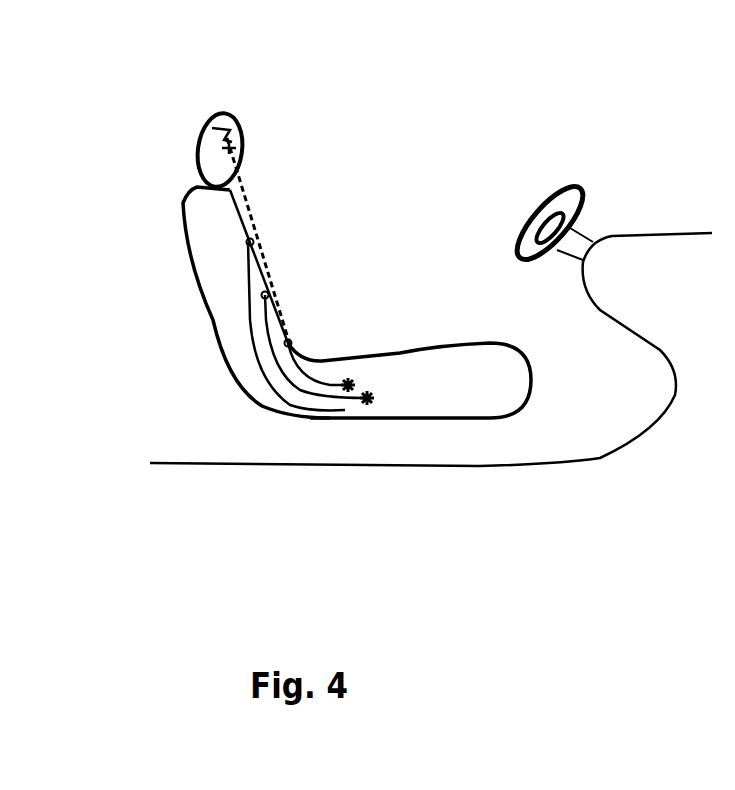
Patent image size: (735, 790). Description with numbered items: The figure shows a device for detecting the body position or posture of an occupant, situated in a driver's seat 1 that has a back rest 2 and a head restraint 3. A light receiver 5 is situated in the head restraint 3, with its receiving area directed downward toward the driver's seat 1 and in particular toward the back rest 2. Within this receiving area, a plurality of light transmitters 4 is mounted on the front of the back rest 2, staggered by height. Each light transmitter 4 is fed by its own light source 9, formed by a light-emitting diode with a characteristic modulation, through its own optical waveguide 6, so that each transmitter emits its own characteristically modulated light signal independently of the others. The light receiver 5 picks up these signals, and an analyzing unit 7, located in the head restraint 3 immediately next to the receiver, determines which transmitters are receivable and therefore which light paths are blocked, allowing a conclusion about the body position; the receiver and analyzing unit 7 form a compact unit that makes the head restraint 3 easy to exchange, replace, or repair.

The driver's seat 1 is at (477, 392).
The back rest 2 is at (215, 258).
The head restraint 3 is at (215, 160).
The light transmitters 4 is at (353, 312).
The light receiver 5 is at (240, 125).
The optical waveguide 6 is at (247, 332).
The analyzing unit 7 is at (208, 122).
The light source 9 is at (367, 400).